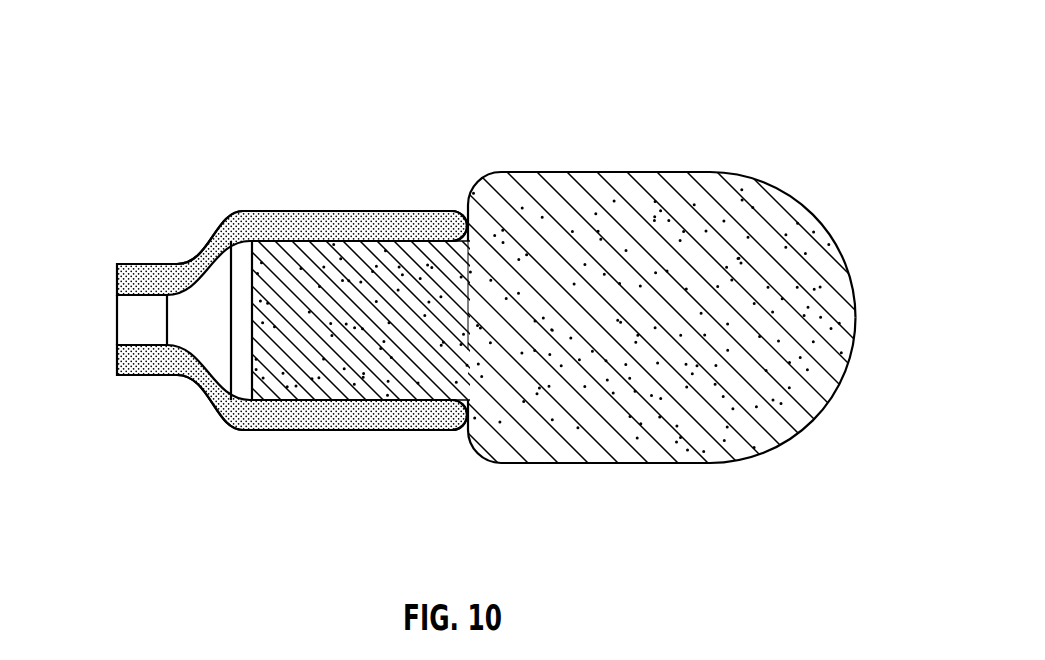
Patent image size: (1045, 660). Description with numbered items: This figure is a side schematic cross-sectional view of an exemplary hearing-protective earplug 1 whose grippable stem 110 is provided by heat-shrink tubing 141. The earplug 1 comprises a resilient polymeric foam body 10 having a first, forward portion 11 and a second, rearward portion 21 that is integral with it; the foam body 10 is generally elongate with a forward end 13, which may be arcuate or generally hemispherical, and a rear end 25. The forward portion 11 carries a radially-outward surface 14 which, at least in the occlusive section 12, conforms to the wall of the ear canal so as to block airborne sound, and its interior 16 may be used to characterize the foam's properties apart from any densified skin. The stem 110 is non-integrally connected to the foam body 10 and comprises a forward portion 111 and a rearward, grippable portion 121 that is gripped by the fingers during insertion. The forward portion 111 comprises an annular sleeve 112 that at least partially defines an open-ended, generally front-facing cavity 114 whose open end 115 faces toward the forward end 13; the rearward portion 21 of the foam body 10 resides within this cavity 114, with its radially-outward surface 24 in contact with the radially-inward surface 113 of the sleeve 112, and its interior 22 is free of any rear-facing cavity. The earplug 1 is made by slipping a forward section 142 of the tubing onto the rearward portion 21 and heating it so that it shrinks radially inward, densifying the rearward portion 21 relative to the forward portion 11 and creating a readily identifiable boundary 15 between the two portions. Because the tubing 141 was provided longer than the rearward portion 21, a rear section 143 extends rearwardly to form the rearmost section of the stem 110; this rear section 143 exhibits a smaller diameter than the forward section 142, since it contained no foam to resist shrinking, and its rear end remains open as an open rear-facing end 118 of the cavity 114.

The hearing-protective earplug 1 is at (252, 40).
The resilient polymeric foam body 10 is at (848, 96).
The first, forward portion 11 is at (712, 175).
The occlusive section 12 is at (733, 450).
The forward end 13 is at (860, 371).
The radially-outward surface 14 is at (605, 172).
The boundary 15 is at (470, 335).
The interior 16 is at (673, 331).
The second, rearward portion 21 is at (292, 250).
The interior 22 is at (327, 333).
The radially-outward surface 24 is at (337, 243).
The rear end 25 is at (256, 383).
The grippable stem 110 is at (118, 152).
The forward portion 111 is at (372, 210).
The annular sleeve 112 is at (333, 432).
The radially-inward surface 113 is at (423, 397).
The open-ended cavity 114 is at (397, 333).
The open end 115 is at (470, 275).
The open rear-facing end 118 is at (200, 337).
The rearward, grippable portion 121 is at (208, 228).
The heat-shrink tubing 141 is at (430, 215).
The forward section 142 is at (398, 413).
The rear section 143 is at (140, 377).